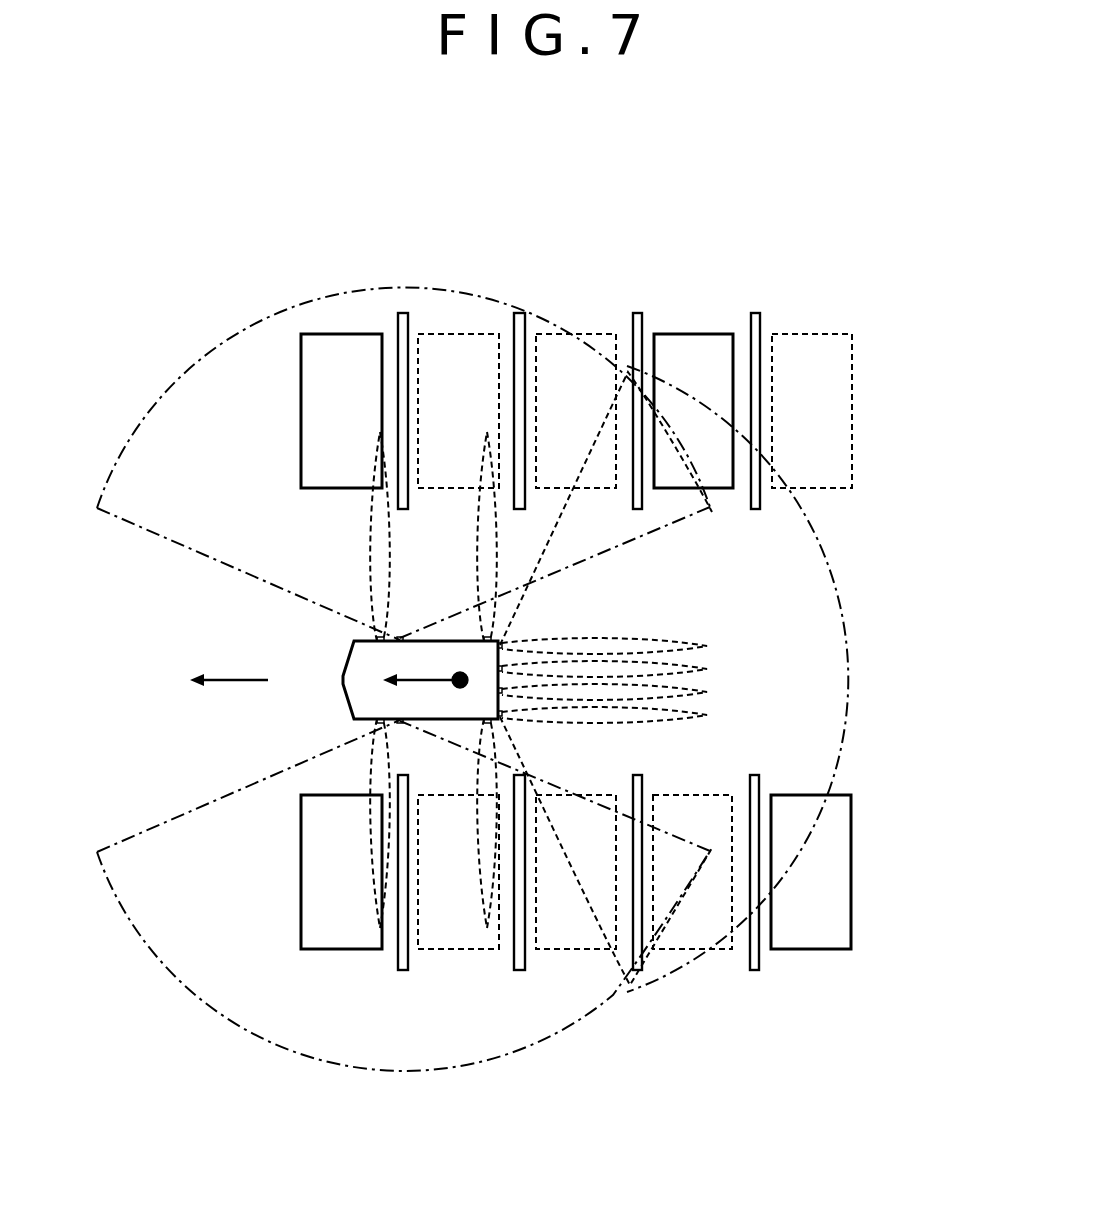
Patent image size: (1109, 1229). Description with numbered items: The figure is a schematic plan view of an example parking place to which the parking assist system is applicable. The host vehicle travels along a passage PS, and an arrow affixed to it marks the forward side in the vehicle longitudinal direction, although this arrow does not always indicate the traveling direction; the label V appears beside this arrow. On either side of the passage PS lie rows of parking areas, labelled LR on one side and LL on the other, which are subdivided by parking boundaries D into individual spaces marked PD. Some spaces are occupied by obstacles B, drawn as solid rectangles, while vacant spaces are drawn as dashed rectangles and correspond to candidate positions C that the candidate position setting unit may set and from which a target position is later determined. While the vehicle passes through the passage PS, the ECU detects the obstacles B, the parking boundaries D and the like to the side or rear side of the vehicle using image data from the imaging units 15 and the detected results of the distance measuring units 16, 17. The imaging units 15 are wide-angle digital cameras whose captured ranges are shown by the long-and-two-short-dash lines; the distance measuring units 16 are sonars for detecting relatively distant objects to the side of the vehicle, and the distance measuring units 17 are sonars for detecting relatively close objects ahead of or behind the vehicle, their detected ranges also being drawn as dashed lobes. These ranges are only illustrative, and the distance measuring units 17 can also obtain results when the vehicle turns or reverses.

The imaging unit 15 is at (401, 638).
The distance measuring unit 16 is at (378, 637).
The distance measuring unit 17 is at (500, 647).
The obstacle B is at (318, 334).
The candidate position C is at (428, 334).
The parking boundary D is at (403, 313).
The parking division PD is at (348, 326).
The right parking row LR is at (872, 418).
The left parking row LL is at (872, 873).
The passage PS is at (872, 670).
The travel direction of vehicle V is at (229, 665).